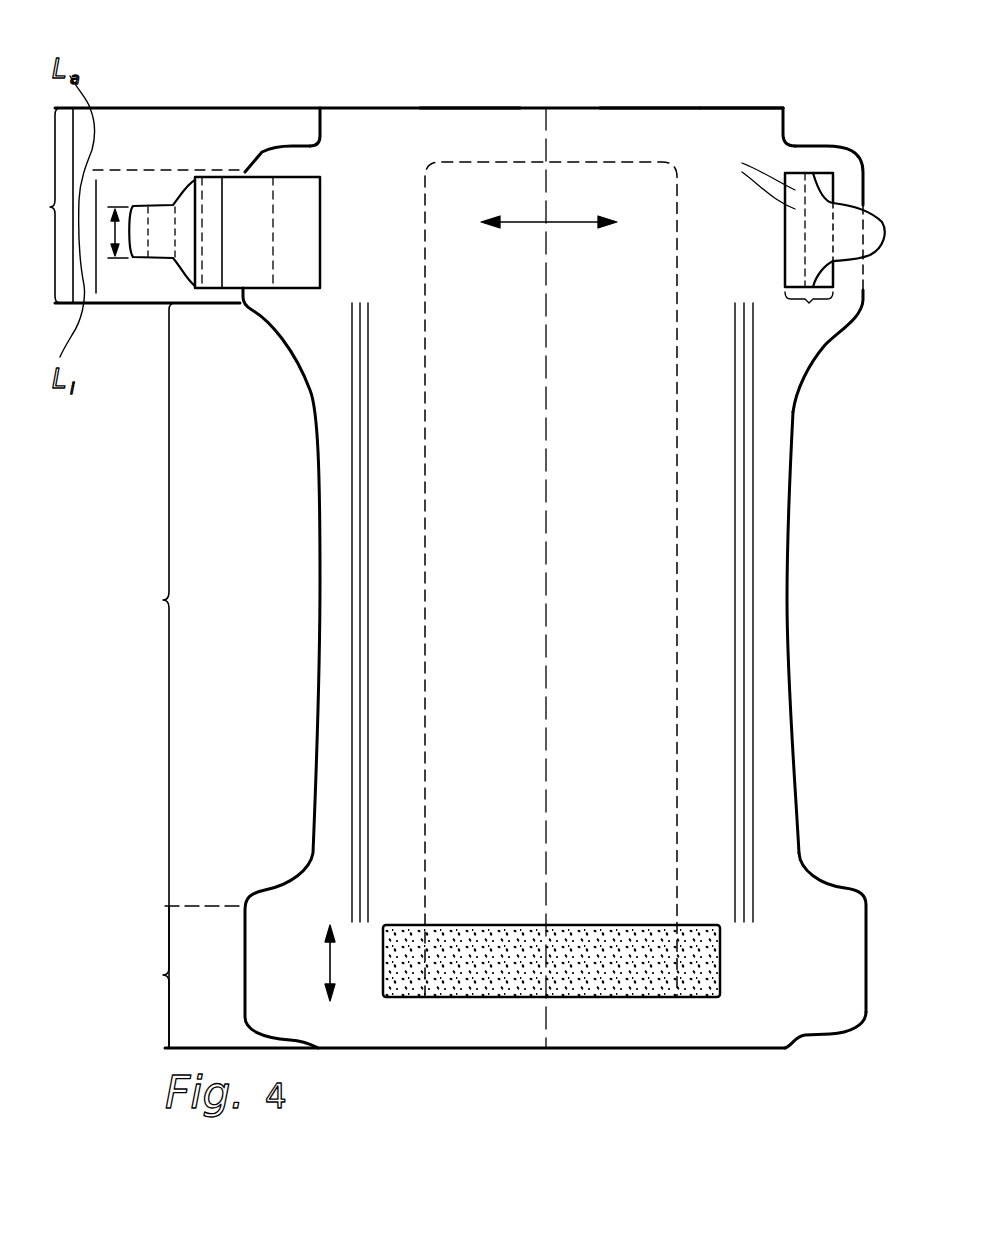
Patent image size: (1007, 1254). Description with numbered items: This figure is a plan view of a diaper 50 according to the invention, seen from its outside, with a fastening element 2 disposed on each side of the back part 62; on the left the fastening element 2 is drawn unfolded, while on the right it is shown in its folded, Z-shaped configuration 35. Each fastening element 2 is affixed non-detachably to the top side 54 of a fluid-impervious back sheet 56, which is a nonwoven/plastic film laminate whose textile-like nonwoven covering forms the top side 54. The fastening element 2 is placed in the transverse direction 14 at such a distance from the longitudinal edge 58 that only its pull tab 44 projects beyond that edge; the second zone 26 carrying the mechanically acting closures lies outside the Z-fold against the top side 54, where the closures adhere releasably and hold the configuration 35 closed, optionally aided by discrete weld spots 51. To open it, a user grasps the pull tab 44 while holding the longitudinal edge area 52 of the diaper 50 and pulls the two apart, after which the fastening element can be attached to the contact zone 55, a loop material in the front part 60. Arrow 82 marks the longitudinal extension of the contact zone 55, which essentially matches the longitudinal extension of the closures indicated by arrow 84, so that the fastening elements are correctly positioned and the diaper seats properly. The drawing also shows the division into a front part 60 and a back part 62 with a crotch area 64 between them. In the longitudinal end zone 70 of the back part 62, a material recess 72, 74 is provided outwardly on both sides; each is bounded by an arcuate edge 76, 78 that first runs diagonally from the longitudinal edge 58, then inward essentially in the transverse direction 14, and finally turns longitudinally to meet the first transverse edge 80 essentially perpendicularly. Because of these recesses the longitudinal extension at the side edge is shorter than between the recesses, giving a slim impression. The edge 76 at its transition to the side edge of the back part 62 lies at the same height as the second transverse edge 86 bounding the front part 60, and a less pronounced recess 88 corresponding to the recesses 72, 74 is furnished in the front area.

The fastening element 2 is at (779, 262).
The transverse direction 14 is at (548, 222).
The second zone 26 is at (848, 232).
The folded, Z-shaped configuration 35 is at (809, 313).
The pull tab 44 is at (884, 222).
The diaper 50 is at (368, 108).
The weld spots 51 is at (751, 181).
The longitudinal edge area 52 is at (846, 302).
The top side 54 is at (636, 132).
The contact zone 55 is at (632, 977).
The back sheet 56 is at (710, 117).
The longitudinal edge 58 is at (866, 284).
The front part 60 is at (186, 977).
The back part 62 is at (129, 216).
The crotch area 64 is at (151, 675).
The longitudinal end zone 70 is at (474, 114).
The material recess 72 is at (855, 130).
The material recess 74 is at (303, 140).
The arcuate edge 76 is at (788, 128).
The arcuate edge 78 is at (270, 148).
The first transverse edge 80 is at (590, 108).
The arrow indicating longitudinal extension of contact zone 82 is at (328, 962).
The arrow indicating longitudinal extension of closures 84 is at (112, 233).
The second transverse edge 86 is at (495, 1048).
The less pronounced recess 88 is at (812, 1037).